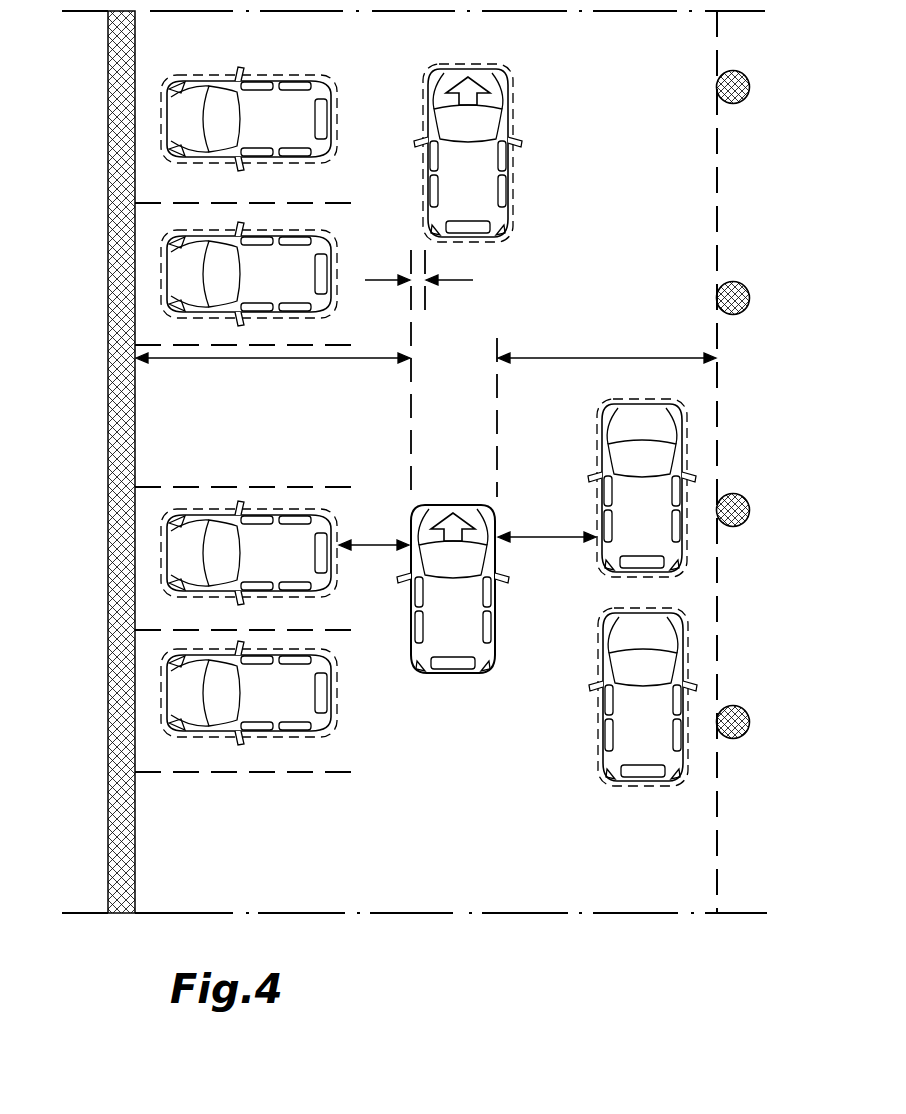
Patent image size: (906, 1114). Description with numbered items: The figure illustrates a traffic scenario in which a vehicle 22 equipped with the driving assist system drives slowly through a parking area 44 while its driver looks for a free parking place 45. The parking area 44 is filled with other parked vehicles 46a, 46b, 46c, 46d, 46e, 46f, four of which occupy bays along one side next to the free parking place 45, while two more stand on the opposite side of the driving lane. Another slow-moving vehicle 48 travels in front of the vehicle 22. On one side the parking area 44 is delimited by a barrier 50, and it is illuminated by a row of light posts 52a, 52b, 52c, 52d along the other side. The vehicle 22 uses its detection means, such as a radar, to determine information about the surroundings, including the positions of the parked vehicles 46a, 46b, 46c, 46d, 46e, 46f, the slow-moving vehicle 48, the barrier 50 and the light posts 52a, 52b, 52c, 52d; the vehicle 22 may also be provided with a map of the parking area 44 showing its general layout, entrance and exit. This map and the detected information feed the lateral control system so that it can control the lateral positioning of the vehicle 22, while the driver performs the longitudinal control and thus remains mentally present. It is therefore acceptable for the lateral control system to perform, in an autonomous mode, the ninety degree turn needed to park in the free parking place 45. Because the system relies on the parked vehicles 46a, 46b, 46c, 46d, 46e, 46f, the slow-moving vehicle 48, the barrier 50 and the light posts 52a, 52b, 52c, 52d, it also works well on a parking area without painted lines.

The vehicle 22 is at (453, 589).
The parking area 44 is at (458, 850).
The free parking place 45 is at (275, 433).
The parked vehicle 46a is at (249, 119).
The parked vehicle 46b is at (249, 274).
The parked vehicle 46c is at (249, 553).
The parked vehicle 46d is at (249, 693).
The parked vehicle 46e is at (642, 488).
The parked vehicle 46f is at (643, 697).
The slow-moving vehicle 48 is at (468, 153).
The barrier 50 is at (130, 712).
The light post 52a is at (735, 96).
The light post 52b is at (735, 307).
The light post 52c is at (735, 519).
The light post 52d is at (735, 731).